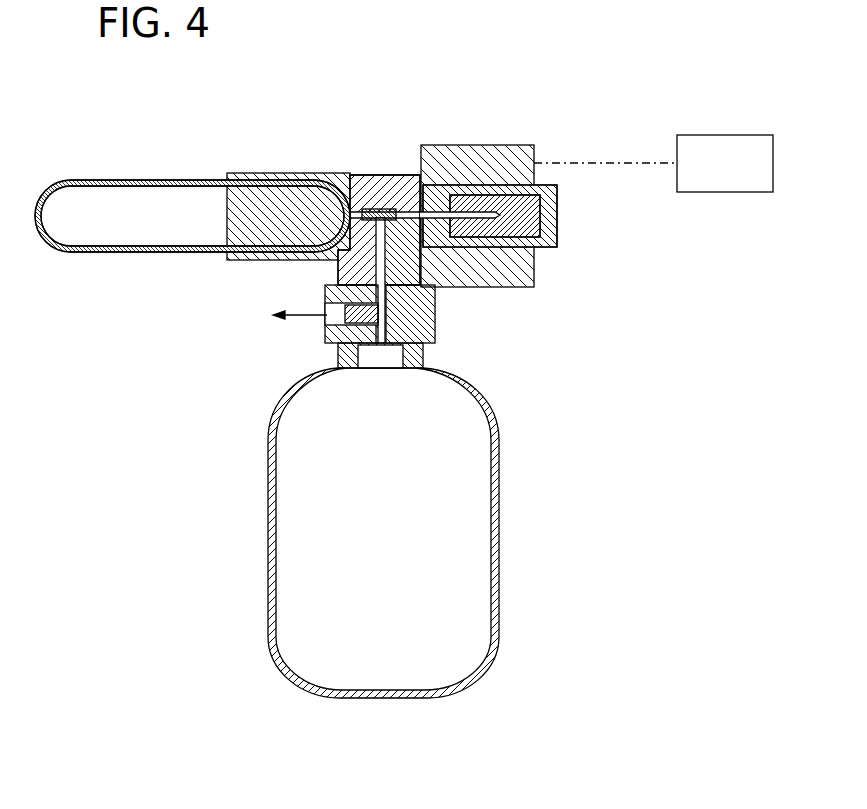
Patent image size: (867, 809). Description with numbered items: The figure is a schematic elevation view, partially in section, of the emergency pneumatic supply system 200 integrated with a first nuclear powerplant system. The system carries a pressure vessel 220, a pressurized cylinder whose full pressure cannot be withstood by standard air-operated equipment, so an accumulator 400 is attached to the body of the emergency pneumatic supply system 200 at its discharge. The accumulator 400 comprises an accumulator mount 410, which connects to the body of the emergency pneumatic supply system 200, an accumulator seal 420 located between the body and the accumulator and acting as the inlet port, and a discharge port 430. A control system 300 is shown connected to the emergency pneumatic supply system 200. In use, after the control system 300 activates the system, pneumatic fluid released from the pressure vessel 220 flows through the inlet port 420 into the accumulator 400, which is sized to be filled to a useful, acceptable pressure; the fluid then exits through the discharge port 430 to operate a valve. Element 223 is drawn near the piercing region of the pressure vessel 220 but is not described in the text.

The emergency pneumatic supply system 200 is at (597, 303).
The pressure vessel 220 is at (187, 228).
The piercing needle / seal 223 is at (378, 197).
The control system 300 is at (747, 180).
The accumulator 400 is at (392, 515).
The accumulator mount 410 is at (441, 347).
The accumulator seal 420 is at (398, 291).
The discharge port 430 is at (318, 332).